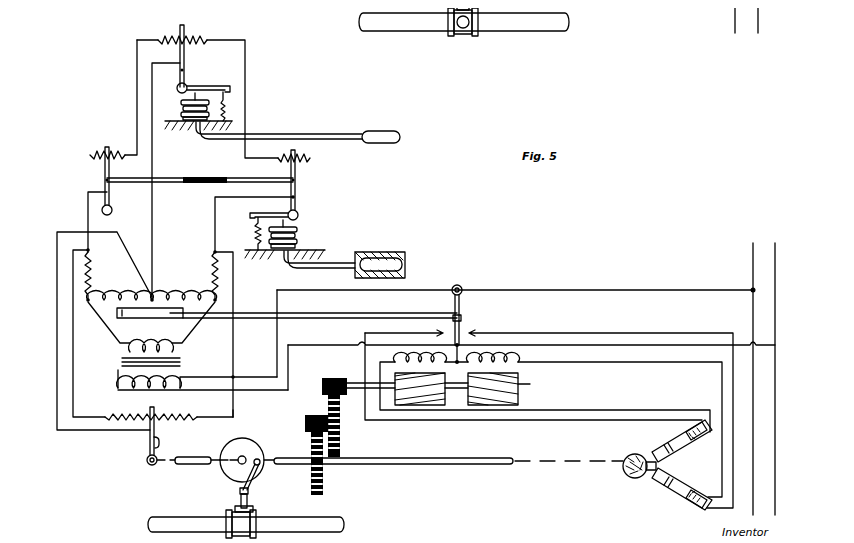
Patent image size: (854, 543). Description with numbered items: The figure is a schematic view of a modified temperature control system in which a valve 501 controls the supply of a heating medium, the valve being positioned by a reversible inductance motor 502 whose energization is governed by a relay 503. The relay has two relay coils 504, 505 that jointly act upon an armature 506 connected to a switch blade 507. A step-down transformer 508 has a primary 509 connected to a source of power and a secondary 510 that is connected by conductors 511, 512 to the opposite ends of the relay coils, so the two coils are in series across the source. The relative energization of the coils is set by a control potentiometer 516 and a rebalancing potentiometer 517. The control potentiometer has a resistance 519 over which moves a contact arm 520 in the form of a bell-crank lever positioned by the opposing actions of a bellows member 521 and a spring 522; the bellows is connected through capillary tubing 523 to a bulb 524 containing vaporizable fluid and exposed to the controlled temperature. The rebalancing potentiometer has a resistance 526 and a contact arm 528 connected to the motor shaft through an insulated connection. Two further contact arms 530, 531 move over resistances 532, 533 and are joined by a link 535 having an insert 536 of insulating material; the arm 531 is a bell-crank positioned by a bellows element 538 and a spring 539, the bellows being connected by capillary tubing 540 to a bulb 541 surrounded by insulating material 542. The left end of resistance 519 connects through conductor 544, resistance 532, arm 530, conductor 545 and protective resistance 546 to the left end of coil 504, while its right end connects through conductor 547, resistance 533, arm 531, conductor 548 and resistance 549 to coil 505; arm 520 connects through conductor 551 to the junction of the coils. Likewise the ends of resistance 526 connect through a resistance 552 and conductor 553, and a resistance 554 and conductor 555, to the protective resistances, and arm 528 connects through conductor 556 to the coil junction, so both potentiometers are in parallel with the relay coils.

The valve 501 is at (267, 511).
The reversible inductance motor 502 is at (537, 394).
The relay 503 is at (221, 335).
The relay coil 504 is at (124, 292).
The relay coil 505 is at (186, 292).
The armature 506 is at (128, 336).
The switch blade 507 is at (462, 304).
The step-down transformer 508 is at (119, 365).
The primary 509 is at (170, 390).
The secondary 510 is at (150, 321).
The conductor 511 is at (120, 312).
The conductor 512 is at (178, 321).
The control potentiometer 516 is at (205, 52).
The rebalancing potentiometer 517 is at (131, 446).
The resistance 519 is at (192, 36).
The contact arm 520 is at (180, 57).
The bellows member 521 is at (176, 98).
The spring 522 is at (226, 106).
The capillary tubing 523 is at (332, 134).
The bulb 524 is at (382, 134).
The resistance 526 is at (162, 422).
The contact arm 528 is at (156, 444).
The contact arm 530 is at (102, 173).
The contact arm 531 is at (302, 192).
The resistance 532 is at (90, 155).
The resistance 533 is at (314, 160).
The link 535 is at (178, 178).
The insert 536 is at (214, 178).
The bellows element 538 is at (302, 238).
The spring 539 is at (254, 234).
The capillary tubing 540 is at (314, 265).
The bulb 541 is at (408, 268).
The insulating material 542 is at (400, 252).
The conductor 544 is at (134, 52).
The conductor 545 is at (88, 218).
The protective resistance 546 is at (90, 266).
The conductor 547 is at (246, 52).
The conductor 548 is at (216, 216).
The resistance 549 is at (214, 251).
The conductor 551 is at (150, 122).
The resistance 552 is at (118, 417).
The conductor 553 is at (73, 376).
The resistance 554 is at (196, 417).
The conductor 555 is at (233, 412).
The conductor 556 is at (57, 324).